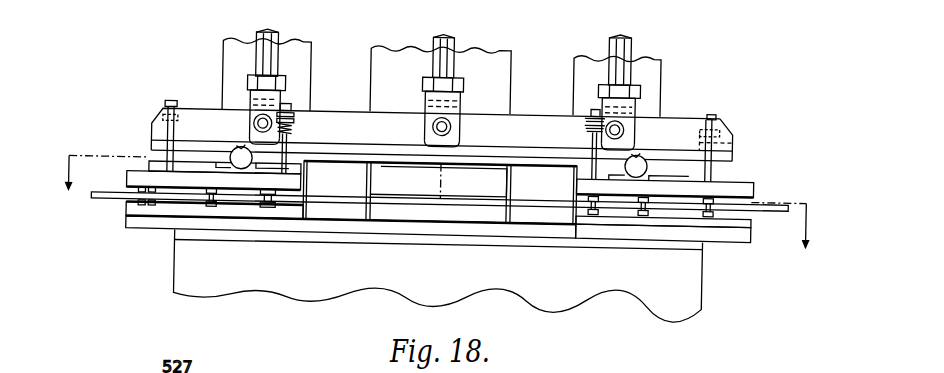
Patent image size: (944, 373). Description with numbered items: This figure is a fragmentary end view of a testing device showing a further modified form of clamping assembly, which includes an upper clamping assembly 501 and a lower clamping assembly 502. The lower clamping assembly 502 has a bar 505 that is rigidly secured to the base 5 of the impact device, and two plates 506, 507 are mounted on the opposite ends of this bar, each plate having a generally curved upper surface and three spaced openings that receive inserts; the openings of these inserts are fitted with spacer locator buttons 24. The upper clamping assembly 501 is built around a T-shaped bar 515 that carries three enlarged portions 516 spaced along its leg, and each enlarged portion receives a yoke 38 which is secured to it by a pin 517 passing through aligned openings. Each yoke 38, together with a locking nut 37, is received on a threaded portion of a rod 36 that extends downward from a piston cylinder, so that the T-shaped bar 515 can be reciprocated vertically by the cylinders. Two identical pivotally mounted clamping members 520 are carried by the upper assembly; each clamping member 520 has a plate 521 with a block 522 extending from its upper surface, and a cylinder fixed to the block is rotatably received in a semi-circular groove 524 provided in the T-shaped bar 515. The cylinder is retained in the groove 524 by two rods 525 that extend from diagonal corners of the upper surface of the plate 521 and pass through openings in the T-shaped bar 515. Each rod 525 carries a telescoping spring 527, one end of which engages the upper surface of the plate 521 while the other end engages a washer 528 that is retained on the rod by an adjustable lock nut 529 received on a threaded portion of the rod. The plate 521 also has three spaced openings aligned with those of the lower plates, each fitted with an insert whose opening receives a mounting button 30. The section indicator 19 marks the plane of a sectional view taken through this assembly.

The base 5 is at (320, 280).
The section line 19- 19 is at (64, 198).
The spacer locator buttons 24 is at (222, 200).
The mounting buttons 30 is at (218, 192).
The rods 36 is at (268, 51).
The locking nut 37 is at (445, 80).
The yoke 38 is at (452, 94).
The upper clamping assembly 501 is at (738, 132).
The lower clamping assembly 502 is at (737, 237).
The bar 505 is at (158, 220).
The plate 506 is at (130, 212).
The plate 507 is at (737, 214).
The T-shaped bar 515 is at (197, 108).
The enlarged portions 516 is at (247, 128).
The pins 517 is at (256, 118).
The clamping members 520 is at (147, 168).
The plate 521 is at (142, 182).
The block 522 is at (310, 169).
The semi-circular groove 524 is at (236, 146).
The rods 525 is at (167, 101).
The telescoping springs 527 is at (293, 127).
The washers 528 is at (294, 118).
The adjustable lock nuts 529 is at (293, 110).